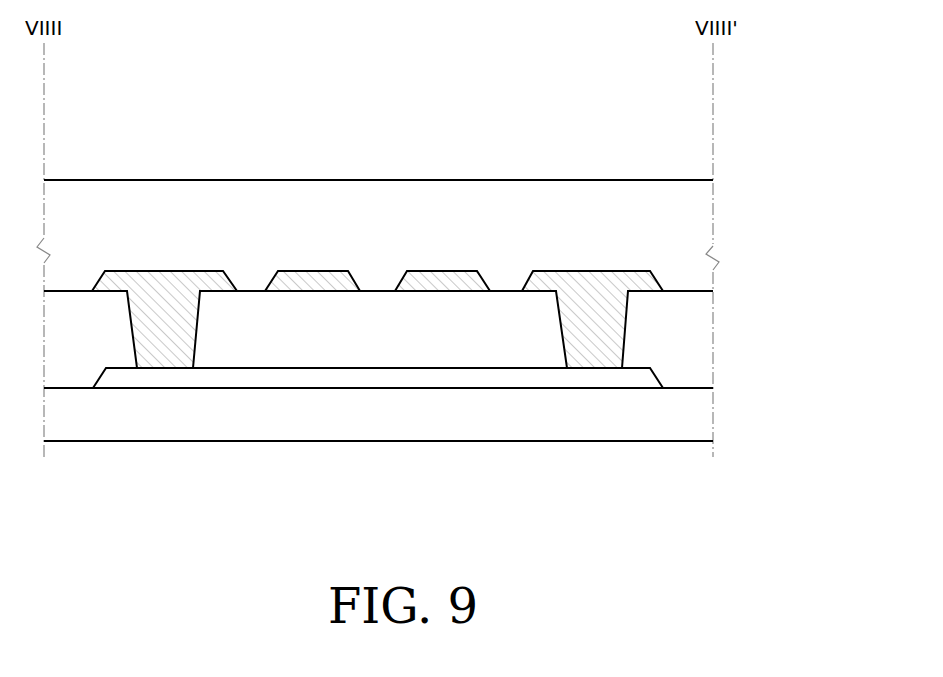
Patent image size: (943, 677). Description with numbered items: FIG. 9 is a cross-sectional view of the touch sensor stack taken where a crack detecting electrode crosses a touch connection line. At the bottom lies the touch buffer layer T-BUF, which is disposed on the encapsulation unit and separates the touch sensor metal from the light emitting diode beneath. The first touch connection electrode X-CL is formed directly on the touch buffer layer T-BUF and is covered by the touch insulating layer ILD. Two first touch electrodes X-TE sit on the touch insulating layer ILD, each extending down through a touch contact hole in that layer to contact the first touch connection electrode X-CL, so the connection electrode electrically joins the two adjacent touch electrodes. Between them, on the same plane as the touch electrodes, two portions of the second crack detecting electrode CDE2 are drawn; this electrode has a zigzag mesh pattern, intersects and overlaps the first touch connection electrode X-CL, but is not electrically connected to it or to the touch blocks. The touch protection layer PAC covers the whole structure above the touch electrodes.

The first touch electrode X-TE is at (159, 280).
The first touch connection electrode X-CL is at (277, 378).
The second crack detecting electrode CDE2 is at (323, 279).
The touch protection layer PAC is at (695, 236).
The touch insulating layer ILD is at (695, 337).
The touch buffer layer T-BUF is at (695, 417).